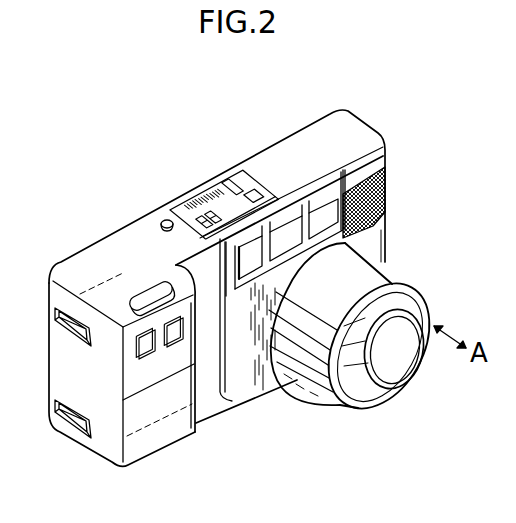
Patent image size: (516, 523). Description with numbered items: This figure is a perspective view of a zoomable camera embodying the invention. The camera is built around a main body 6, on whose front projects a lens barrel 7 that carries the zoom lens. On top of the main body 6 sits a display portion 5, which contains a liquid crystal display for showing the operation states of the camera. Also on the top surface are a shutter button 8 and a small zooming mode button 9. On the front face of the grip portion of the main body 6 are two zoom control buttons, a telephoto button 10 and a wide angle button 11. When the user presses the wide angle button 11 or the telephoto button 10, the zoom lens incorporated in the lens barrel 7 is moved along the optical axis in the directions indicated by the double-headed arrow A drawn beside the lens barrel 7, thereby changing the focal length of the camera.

The display portion 5 is at (222, 178).
The main body 6 is at (366, 121).
The lens barrel 7 is at (399, 309).
The shutter button 8 is at (137, 294).
The zooming mode button 9 is at (163, 219).
The telephoto button 10 is at (173, 346).
The wide angle button 11 is at (137, 342).